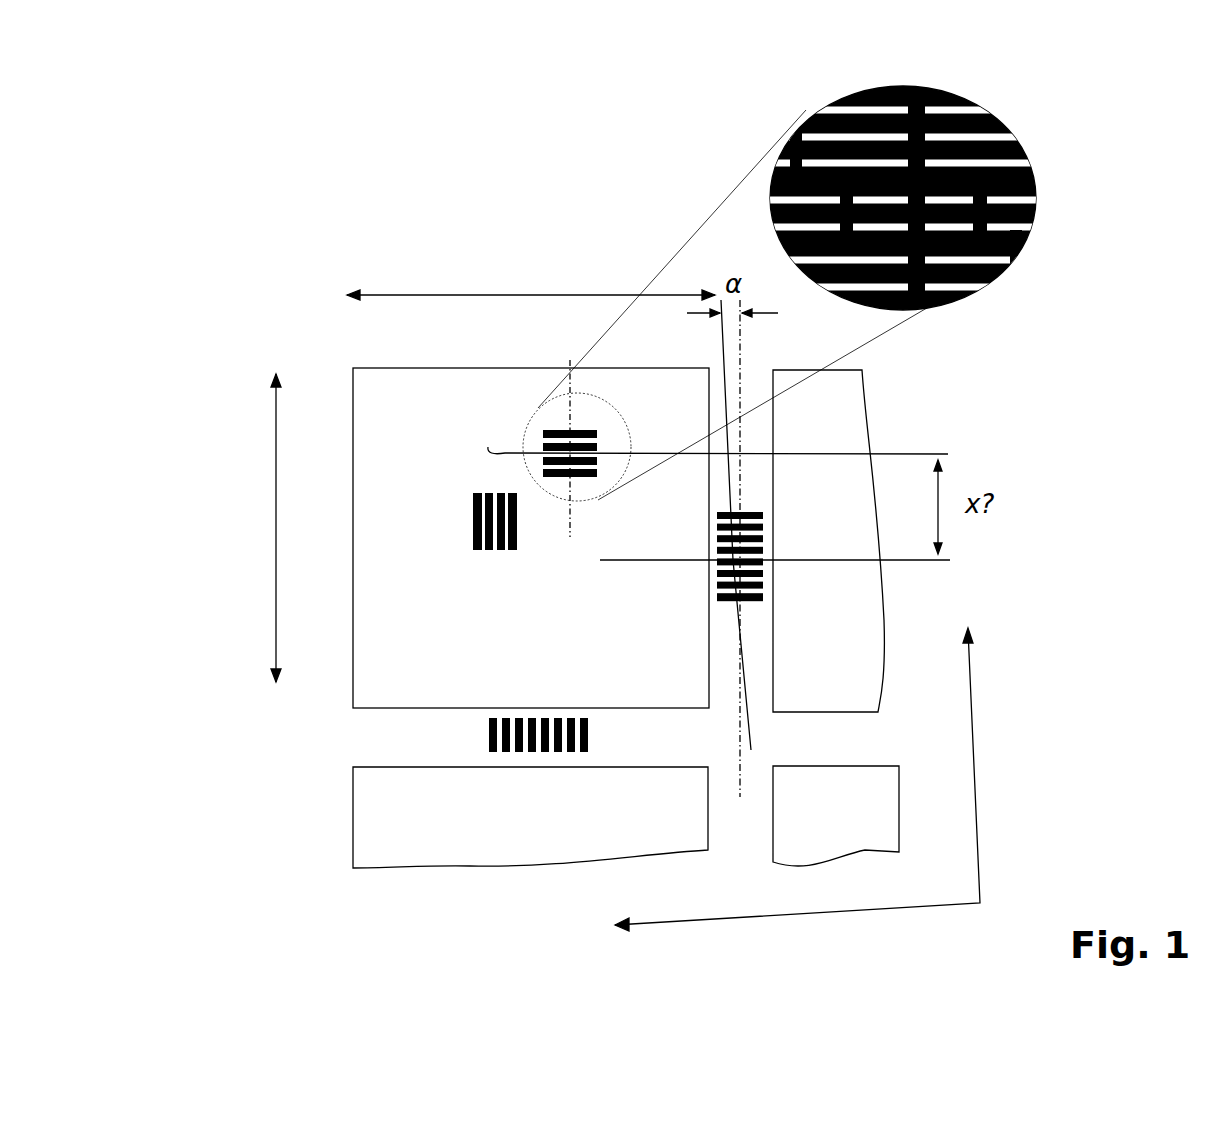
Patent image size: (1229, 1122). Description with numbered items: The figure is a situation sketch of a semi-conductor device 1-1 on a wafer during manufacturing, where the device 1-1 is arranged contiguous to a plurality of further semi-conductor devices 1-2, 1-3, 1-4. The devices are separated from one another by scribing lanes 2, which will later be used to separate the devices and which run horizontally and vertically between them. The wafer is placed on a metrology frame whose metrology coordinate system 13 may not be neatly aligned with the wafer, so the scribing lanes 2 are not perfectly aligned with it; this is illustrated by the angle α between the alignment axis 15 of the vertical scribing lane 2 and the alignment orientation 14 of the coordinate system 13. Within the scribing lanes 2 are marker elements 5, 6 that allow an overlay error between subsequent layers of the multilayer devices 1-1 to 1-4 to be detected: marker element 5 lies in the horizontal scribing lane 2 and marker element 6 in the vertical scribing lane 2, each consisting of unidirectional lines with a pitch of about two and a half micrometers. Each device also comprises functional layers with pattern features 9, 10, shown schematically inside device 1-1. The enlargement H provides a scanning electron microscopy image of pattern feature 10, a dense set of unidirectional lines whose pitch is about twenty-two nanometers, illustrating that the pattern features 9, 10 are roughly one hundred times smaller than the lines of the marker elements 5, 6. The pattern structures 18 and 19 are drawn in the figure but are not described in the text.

The semi-conductor device 1-1 is at (352, 390).
The further semi-conductor device 1-2 is at (866, 420).
The further semi-conductor device 1-3 is at (463, 868).
The further semi-conductor device 1-4 is at (899, 808).
The scribing lane 2 is at (378, 733).
The marker element 5 is at (592, 735).
The marker element 6 is at (725, 605).
The pattern feature 9 is at (498, 552).
The pattern feature 10 is at (713, 438).
The metrology coordinate system 13 is at (980, 820).
The alignment orientation 14 is at (720, 345).
The alignment axis 15 is at (745, 345).
The first register mark 18 is at (585, 438).
The second register mark 19 is at (762, 556).
The enlargement H is at (815, 115).